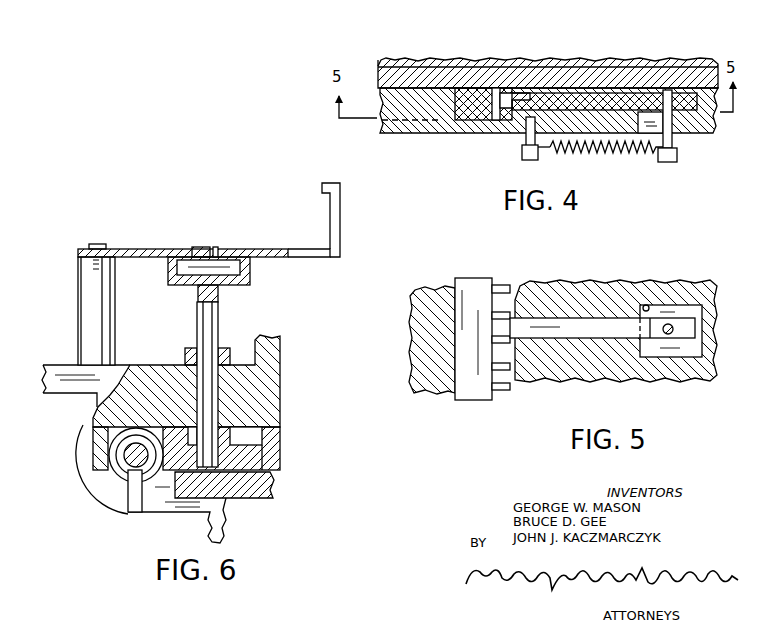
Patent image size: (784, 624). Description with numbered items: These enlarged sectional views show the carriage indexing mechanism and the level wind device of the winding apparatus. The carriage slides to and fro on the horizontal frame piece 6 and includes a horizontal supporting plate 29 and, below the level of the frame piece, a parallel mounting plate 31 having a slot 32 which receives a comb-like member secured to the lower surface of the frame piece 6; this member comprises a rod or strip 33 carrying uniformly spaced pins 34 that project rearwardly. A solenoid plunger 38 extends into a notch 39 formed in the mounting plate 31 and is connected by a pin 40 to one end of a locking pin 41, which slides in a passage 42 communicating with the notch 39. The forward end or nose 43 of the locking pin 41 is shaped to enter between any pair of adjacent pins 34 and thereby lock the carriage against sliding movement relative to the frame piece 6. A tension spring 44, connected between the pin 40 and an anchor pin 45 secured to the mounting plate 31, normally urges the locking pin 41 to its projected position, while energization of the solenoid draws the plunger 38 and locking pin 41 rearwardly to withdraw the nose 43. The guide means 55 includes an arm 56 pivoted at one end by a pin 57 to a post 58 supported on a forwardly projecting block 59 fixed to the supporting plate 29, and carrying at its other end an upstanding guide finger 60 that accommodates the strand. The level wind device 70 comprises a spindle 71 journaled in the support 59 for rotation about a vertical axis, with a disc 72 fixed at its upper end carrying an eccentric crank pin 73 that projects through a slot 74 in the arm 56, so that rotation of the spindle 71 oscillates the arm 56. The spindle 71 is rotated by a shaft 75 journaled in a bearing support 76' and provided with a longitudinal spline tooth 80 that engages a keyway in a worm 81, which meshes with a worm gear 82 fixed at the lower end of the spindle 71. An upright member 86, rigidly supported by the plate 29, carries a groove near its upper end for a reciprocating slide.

In FIG. 4, the horizontal frame piece 6 is at (376, 62).
In FIG. 4, the supporting plate 29 is at (412, 62).
In FIG. 5, the supporting plate 29 is at (520, 298).
In FIG. 6, the supporting plate 29 is at (276, 485).
In FIG. 4, the mounting plate 31 is at (428, 128).
In FIG. 5, the mounting plate 31 is at (412, 330).
In FIG. 4, the slot 32 is at (500, 120).
In FIG. 5, the rod or strip 33 is at (468, 400).
In FIG. 4, the pins 34 is at (505, 92).
In FIG. 5, the pins 34 is at (505, 386).
In FIG. 5, the reciprocable plunger 38 is at (708, 315).
In FIG. 5, the notch 39 is at (647, 304).
In FIG. 4, the pin 40 is at (673, 125).
In FIG. 5, the pin 40 is at (670, 324).
In FIG. 4, the locking pin 41 is at (628, 100).
In FIG. 5, the locking pin 41 is at (612, 335).
In FIG. 5, the passage 42 is at (565, 340).
In FIG. 4, the forward end (nose) 43 is at (523, 92).
In FIG. 5, the forward end (nose) 43 is at (505, 284).
In FIG. 4, the tension spring 44 is at (616, 153).
In FIG. 4, the anchor pin 45 is at (538, 155).
In FIG. 6, the guide means 55 is at (276, 232).
In FIG. 6, the arm 56 is at (306, 258).
In FIG. 6, the pin 57 is at (100, 243).
In FIG. 6, the post 58 is at (100, 316).
In FIG. 6, the block (support) 59 is at (148, 378).
In FIG. 6, the guide finger 60 is at (340, 220).
In FIG. 6, the level wind device 70 is at (182, 247).
In FIG. 6, the spindle 71 is at (213, 326).
In FIG. 6, the disc 72 is at (234, 268).
In FIG. 6, the eccentric crank pin 73 is at (220, 248).
In FIG. 6, the slot 74 is at (200, 249).
In FIG. 6, the shaft 75 is at (130, 505).
In FIG. 6, the bearing support 76' is at (82, 469).
In FIG. 6, the spline tooth 80 is at (116, 440).
In FIG. 6, the worm 81 is at (134, 466).
In FIG. 6, the worm gear 82 is at (245, 455).
In FIG. 6, the upright member 86 is at (270, 362).